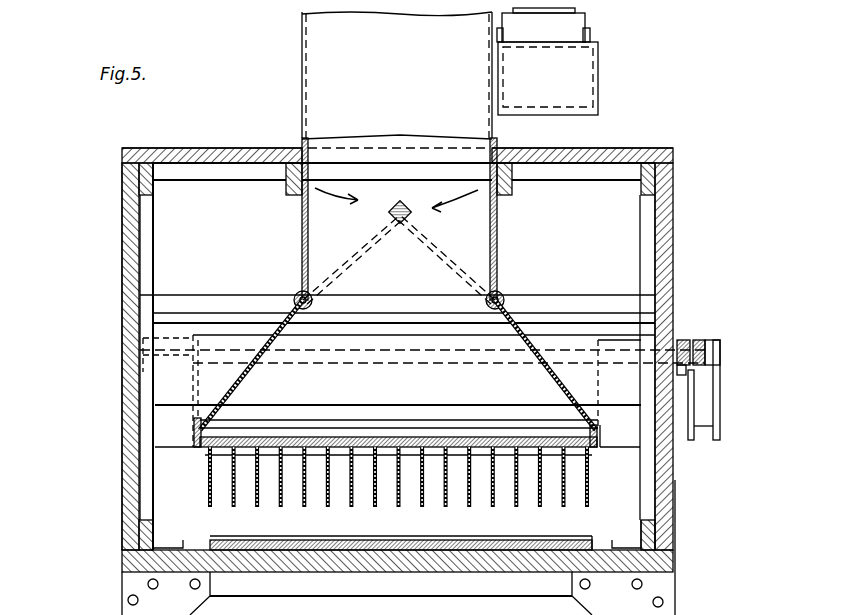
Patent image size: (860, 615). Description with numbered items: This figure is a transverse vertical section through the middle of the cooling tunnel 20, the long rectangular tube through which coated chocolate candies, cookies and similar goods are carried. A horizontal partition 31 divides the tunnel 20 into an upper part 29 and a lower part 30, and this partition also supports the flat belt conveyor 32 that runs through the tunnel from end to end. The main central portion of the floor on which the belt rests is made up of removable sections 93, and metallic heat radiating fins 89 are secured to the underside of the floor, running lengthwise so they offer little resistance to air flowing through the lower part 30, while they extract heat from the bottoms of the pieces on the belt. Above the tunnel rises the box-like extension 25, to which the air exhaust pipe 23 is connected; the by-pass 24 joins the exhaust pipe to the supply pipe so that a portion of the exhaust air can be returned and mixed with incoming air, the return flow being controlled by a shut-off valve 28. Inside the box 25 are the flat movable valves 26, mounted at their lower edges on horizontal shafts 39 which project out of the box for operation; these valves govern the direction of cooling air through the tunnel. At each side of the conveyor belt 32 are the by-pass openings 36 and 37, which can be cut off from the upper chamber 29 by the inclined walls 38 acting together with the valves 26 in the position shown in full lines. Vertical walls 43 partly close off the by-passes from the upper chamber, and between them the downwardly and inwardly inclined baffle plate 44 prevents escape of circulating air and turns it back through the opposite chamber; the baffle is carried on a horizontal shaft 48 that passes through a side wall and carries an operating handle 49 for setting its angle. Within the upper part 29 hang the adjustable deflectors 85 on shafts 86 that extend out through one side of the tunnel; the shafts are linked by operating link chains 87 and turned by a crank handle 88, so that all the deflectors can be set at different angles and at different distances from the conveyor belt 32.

The tunnel 20 is at (677, 234).
The air exhaust pipe 23 is at (300, 22).
The by-pass 24 is at (598, 74).
The box-like extension 25 is at (673, 185).
The movable valves 26 is at (309, 228).
The shut-off valve 28 is at (585, 22).
The upper part 29 is at (625, 418).
The lower part 30 is at (614, 489).
The horizontal partition 31 is at (463, 443).
The flat belt conveyor 32 is at (413, 415).
The by-pass opening 36 is at (170, 446).
The by-pass opening 37 is at (620, 445).
The inclined walls 38 is at (273, 342).
The horizontal shafts 39 is at (297, 294).
The vertical walls 43 is at (193, 420).
The inclined baffle plate 44 is at (362, 420).
The horizontal shaft 48 is at (532, 366).
The operating handle 49 is at (713, 426).
The adjustable deflectors 85 is at (358, 352).
The shafts 86 is at (305, 353).
The operating link chains 87 is at (690, 344).
The crank handle 88 is at (722, 370).
The heat radiating fins 89 is at (210, 503).
The sections 93 is at (340, 447).